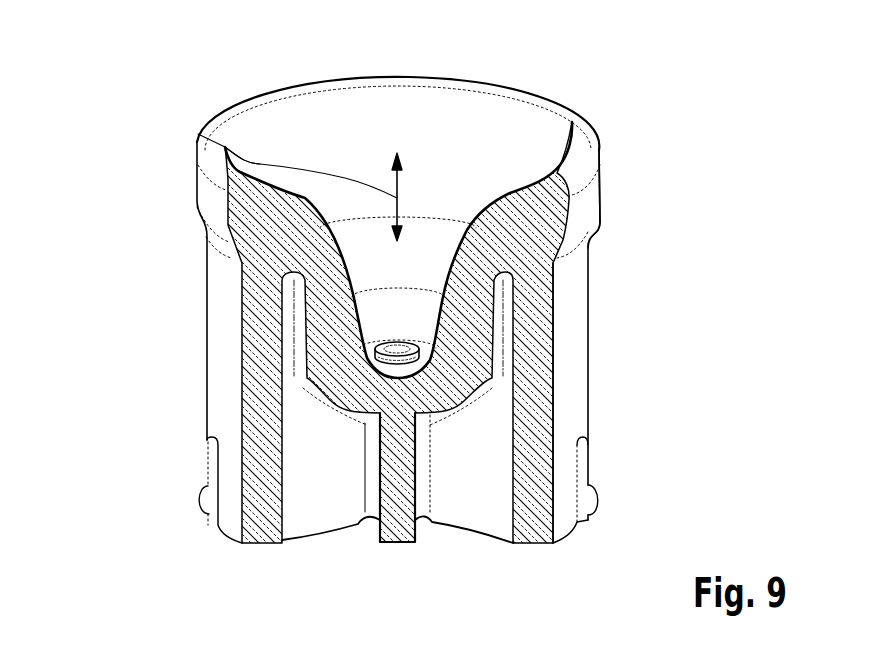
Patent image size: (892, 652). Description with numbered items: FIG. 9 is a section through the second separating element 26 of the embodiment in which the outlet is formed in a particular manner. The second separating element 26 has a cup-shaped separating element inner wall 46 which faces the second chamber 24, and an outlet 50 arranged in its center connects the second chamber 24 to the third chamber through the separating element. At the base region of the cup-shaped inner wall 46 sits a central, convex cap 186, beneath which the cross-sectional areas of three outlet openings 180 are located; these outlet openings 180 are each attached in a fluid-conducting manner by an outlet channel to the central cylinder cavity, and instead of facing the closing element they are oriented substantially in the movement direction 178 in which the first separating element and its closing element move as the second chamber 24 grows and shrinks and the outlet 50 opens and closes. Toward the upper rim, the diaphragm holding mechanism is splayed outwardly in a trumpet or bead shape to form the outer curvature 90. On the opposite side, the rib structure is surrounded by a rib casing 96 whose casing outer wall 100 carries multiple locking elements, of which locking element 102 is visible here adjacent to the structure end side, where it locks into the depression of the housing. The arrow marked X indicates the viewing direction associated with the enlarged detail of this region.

The second separating element 26 is at (253, 90).
The second separating element inner wall 46 is at (319, 142).
The second chamber 24 is at (382, 130).
The outlet 50 is at (399, 314).
The convex cap 186 is at (398, 347).
The movement direction 178 is at (226, 144).
The outer curvature 90 is at (590, 211).
The casing outer wall 100 is at (542, 320).
The viewing direction X is at (495, 395).
The locking element 102 is at (203, 498).
The rib casing 96 is at (553, 515).
The outlet openings 180 is at (438, 488).